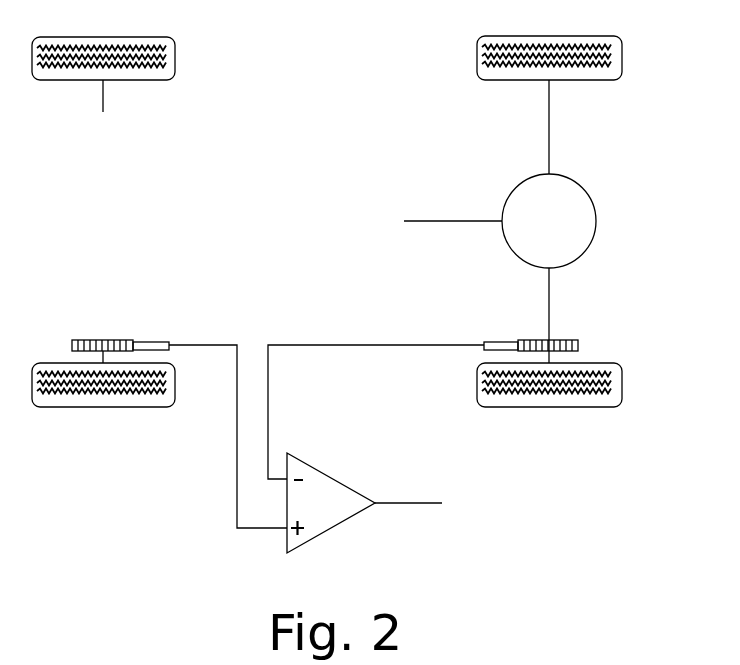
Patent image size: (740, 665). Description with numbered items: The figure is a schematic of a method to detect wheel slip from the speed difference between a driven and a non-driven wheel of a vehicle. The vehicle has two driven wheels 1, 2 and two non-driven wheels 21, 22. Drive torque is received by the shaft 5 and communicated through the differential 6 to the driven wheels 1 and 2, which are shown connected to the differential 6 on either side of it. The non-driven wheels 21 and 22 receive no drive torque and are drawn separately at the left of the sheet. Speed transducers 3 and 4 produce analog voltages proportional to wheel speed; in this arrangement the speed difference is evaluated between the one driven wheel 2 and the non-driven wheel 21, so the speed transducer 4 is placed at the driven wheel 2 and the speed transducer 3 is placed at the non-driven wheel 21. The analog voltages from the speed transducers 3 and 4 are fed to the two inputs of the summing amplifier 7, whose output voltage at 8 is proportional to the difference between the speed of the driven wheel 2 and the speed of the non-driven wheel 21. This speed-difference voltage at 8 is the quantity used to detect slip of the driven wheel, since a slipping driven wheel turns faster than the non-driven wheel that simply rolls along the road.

The driven wheel 1 is at (610, 40).
The driven wheel 2 is at (610, 405).
The speed transducer 3 is at (142, 344).
The speed transducer 4 is at (510, 343).
The shaft 5 is at (448, 221).
The differential 6 is at (587, 193).
The summing amplifier 7 is at (298, 462).
The output voltage 8 is at (385, 503).
The non-driven wheel 21 is at (163, 405).
The non-driven wheel 22 is at (163, 40).